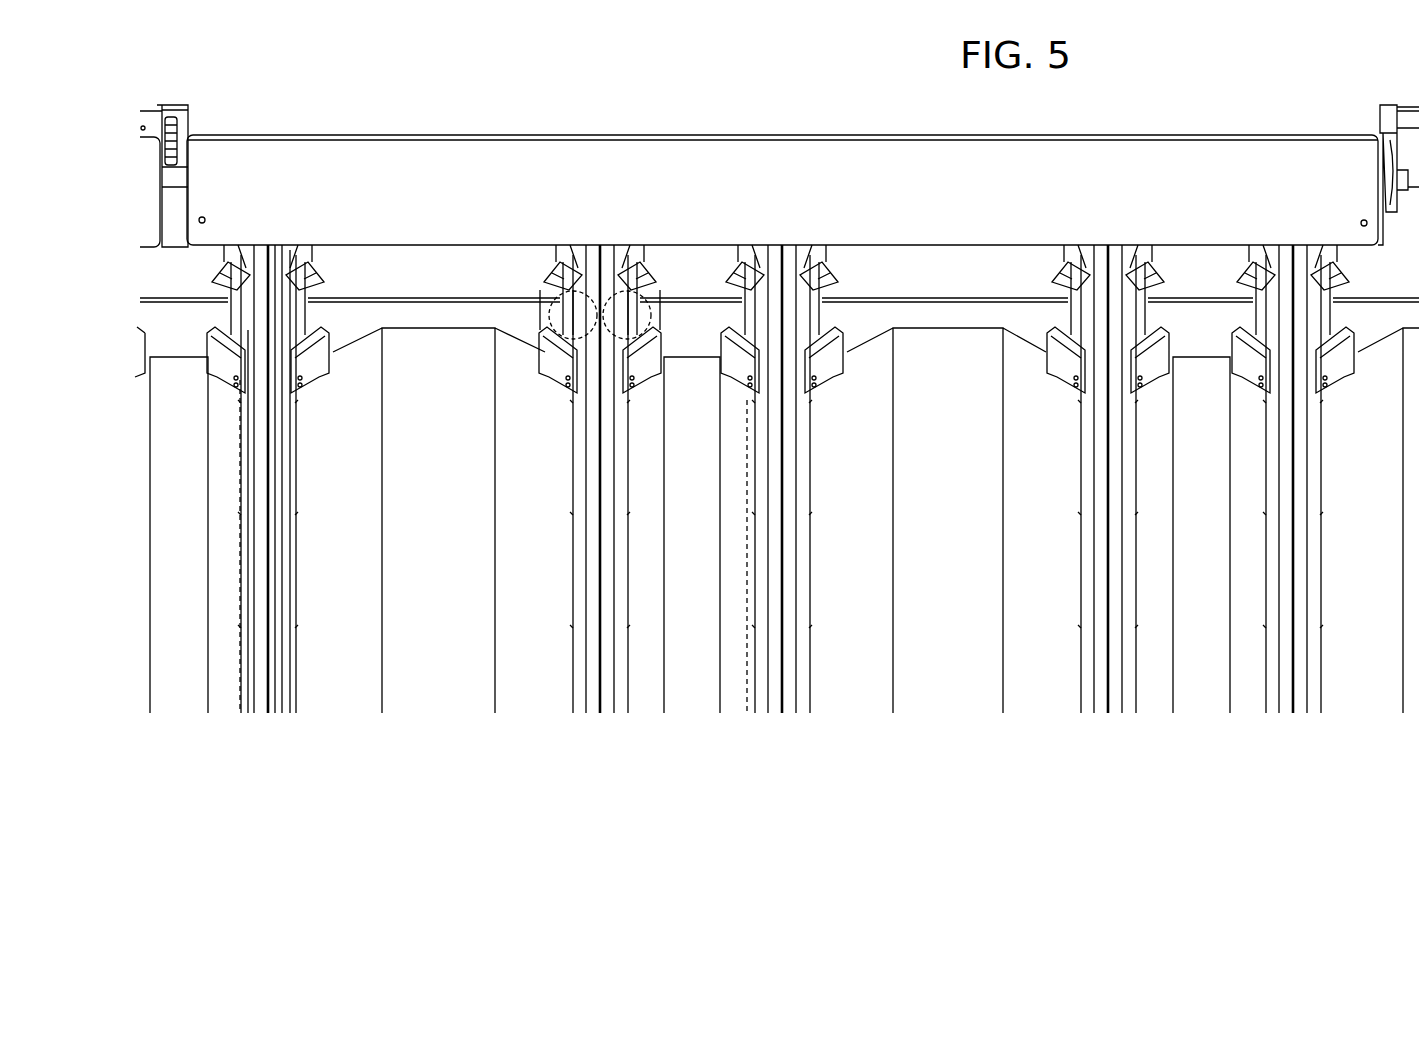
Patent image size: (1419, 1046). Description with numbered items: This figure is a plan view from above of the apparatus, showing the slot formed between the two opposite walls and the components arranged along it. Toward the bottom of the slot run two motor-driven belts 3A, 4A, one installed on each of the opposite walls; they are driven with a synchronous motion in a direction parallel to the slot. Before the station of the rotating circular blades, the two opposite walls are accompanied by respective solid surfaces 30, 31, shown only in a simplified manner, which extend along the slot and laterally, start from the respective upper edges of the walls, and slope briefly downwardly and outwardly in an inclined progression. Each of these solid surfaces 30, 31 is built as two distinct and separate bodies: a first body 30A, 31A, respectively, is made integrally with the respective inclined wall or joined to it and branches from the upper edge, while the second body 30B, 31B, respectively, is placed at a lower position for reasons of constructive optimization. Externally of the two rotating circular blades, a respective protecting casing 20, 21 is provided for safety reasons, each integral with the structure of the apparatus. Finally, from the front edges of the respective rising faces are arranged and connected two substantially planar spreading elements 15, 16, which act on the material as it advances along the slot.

The motor-driven belt 3A is at (588, 609).
The motor-driven belt 4A is at (606, 596).
The spreading element 15 is at (563, 263).
The spreading element 16 is at (620, 260).
The protecting casing 20 is at (549, 252).
The protecting casing 21 is at (636, 253).
The solid surface 30 is at (537, 292).
The first body 30A is at (573, 308).
The second body 30B is at (557, 328).
The solid surface 31 is at (650, 288).
The first body 31A is at (617, 322).
The second body 31B is at (629, 312).